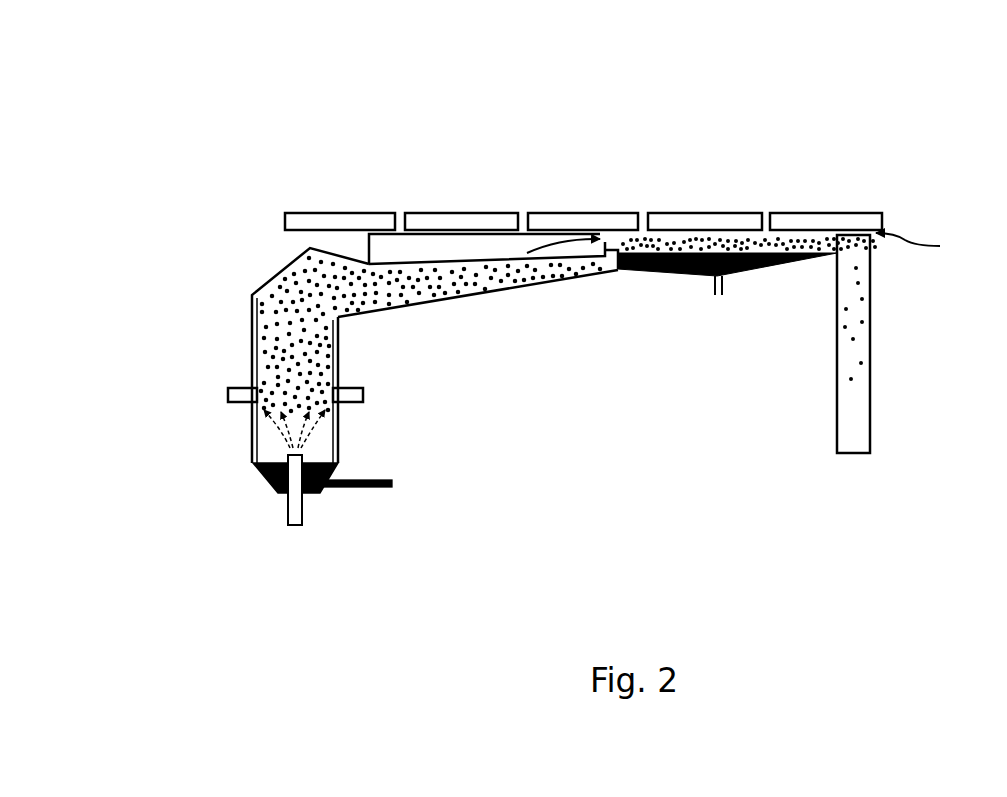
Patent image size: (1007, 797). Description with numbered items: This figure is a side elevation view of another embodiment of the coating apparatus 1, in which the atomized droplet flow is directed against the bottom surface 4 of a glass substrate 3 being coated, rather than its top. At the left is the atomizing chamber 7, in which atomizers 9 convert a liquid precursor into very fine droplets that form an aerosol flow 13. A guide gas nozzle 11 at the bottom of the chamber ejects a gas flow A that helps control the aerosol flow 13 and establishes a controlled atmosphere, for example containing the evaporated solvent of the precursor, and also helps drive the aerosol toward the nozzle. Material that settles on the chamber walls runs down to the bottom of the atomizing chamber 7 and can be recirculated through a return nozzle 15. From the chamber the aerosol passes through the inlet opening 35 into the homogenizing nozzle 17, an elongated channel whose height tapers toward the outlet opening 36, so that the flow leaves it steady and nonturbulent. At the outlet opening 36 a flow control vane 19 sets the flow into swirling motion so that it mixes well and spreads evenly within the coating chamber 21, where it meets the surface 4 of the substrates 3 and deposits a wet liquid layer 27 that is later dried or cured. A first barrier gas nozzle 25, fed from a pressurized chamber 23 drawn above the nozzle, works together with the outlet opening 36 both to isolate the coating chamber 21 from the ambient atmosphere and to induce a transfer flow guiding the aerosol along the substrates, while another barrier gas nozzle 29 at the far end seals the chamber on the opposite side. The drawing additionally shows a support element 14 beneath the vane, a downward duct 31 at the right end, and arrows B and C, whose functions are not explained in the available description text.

The apparatus 1 is at (614, 444).
The substrate 3 is at (453, 223).
The surface 4 is at (285, 232).
The atomizing chamber 7 is at (253, 360).
The atomizers 9 is at (242, 393).
The guide gas nozzle 11 is at (298, 518).
The aerosol flow 13 is at (270, 348).
The support 14 is at (722, 292).
The return nozzle 15 is at (343, 490).
The homogenizing nozzle 17 is at (485, 305).
The flow control vane 19 is at (617, 275).
The coating chamber 21 is at (722, 245).
The pressurized chamber 23 is at (432, 257).
The barrier gas nozzle 25 is at (620, 250).
The liquid layer 27 is at (817, 232).
The barrier gas nozzle 29 is at (872, 238).
The excess powder collector 31 is at (850, 455).
The inlet opening 35 is at (353, 305).
The outlet opening 36 is at (600, 247).
The gas flow A is at (278, 423).
The substrate transport direction B is at (565, 247).
The powder flow direction C is at (905, 232).